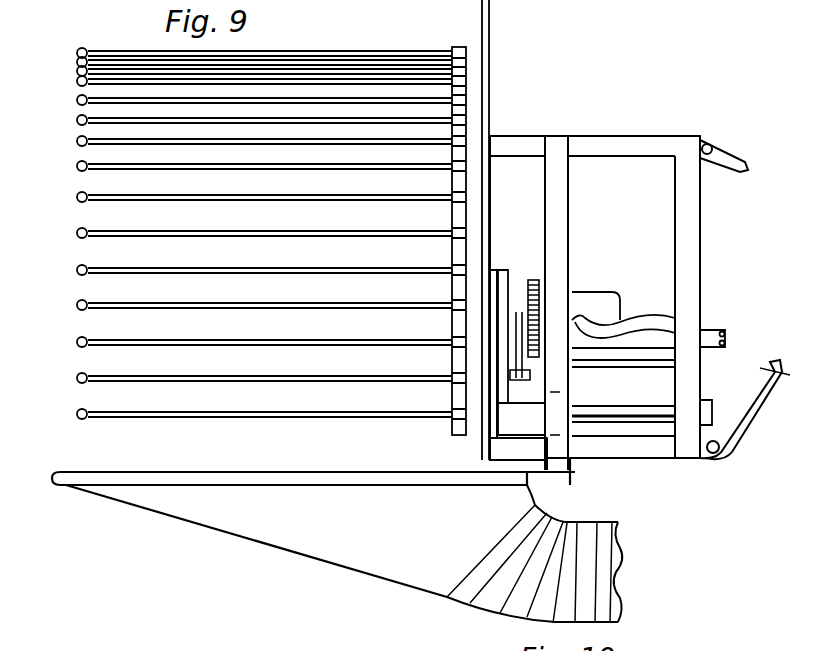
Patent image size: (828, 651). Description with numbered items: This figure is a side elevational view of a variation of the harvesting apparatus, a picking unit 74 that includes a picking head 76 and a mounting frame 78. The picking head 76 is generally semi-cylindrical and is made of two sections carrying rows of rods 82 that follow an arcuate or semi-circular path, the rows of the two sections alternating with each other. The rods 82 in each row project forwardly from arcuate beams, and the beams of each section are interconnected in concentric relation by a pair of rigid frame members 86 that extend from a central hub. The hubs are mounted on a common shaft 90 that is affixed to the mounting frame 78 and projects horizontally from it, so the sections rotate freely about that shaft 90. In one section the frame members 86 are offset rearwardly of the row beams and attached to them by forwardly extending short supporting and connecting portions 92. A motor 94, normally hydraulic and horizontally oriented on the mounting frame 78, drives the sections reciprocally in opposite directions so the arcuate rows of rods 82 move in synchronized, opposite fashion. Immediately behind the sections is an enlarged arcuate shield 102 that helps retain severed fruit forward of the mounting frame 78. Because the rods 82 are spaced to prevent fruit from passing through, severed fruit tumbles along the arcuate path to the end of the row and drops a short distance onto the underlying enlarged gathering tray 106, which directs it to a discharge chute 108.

The picking unit 74 is at (558, 98).
The picking head 76 is at (413, 46).
The mounting frame 78 is at (608, 134).
The rods 82 is at (88, 308).
The frame members 86 is at (508, 292).
The shaft 90 is at (600, 412).
The supporting and connecting portions 92 is at (493, 272).
The motor 94 is at (598, 300).
The shield 102 is at (486, 33).
The gathering tray 106 is at (230, 525).
The discharge chute 108 is at (600, 546).